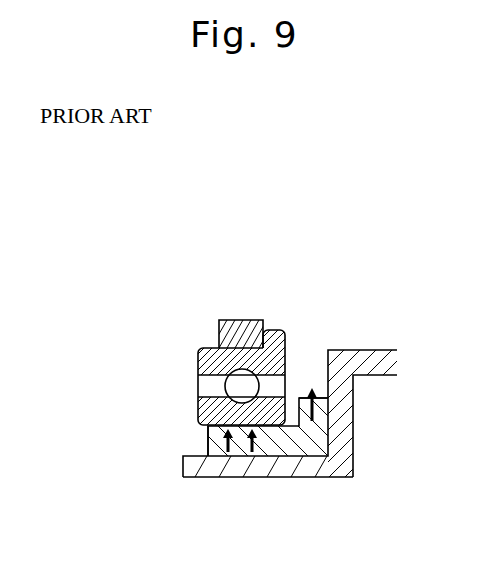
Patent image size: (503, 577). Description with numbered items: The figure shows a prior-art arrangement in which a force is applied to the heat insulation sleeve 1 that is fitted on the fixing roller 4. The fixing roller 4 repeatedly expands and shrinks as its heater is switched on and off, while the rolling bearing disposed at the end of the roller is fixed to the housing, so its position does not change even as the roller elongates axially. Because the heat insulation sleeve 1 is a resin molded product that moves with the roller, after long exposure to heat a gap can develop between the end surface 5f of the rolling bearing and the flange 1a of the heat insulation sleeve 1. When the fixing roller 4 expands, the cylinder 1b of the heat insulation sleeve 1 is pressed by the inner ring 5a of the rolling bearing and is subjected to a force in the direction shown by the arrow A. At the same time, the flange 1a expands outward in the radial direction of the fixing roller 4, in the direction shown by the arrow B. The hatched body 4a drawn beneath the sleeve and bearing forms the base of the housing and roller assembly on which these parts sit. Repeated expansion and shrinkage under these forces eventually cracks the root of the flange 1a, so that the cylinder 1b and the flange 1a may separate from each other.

The heat insulation sleeve 1 is at (303, 455).
The flange 1a is at (301, 392).
The cylinder 1b is at (208, 451).
The fixing roller 4 is at (368, 350).
The bottom surface of housing 4a is at (235, 478).
The inner ring 5a is at (198, 417).
The end surface 5f is at (297, 395).
The arrow A is at (270, 460).
The arrow B is at (315, 412).